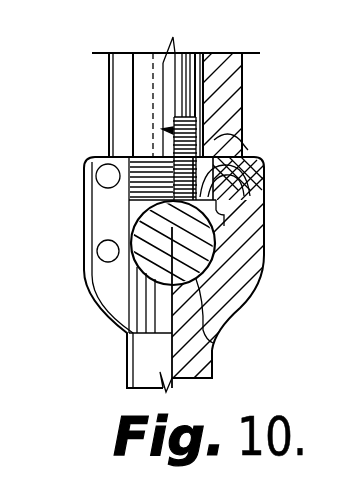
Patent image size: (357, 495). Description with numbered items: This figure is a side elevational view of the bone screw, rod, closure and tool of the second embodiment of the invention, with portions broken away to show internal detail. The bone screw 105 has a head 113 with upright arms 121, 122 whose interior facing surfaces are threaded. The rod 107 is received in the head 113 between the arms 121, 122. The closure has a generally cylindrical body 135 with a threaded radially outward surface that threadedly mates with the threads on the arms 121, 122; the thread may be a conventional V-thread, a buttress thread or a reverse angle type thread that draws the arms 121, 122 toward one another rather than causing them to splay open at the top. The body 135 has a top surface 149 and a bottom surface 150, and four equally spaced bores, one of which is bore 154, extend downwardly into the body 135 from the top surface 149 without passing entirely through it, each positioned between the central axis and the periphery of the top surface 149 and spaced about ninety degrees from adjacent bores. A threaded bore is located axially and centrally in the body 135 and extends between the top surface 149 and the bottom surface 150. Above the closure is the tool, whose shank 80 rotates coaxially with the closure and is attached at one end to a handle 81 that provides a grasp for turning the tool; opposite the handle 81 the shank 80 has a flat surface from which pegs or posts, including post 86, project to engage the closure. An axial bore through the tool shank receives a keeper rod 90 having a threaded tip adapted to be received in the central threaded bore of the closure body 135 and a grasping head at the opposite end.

The shank 80 is at (107, 67).
The handle 81 is at (243, 100).
The peg or post 86 is at (244, 128).
The adjusting screw 90 is at (210, 73).
The bone screw 105 is at (212, 372).
The rod 107 is at (213, 343).
The head 113 is at (266, 292).
The upright arm 121 is at (84, 228).
The upright arm 122 is at (267, 262).
The body 135 is at (266, 186).
The top surface 149 is at (248, 150).
The bottom surface 150 is at (266, 222).
The bore 154 is at (266, 210).